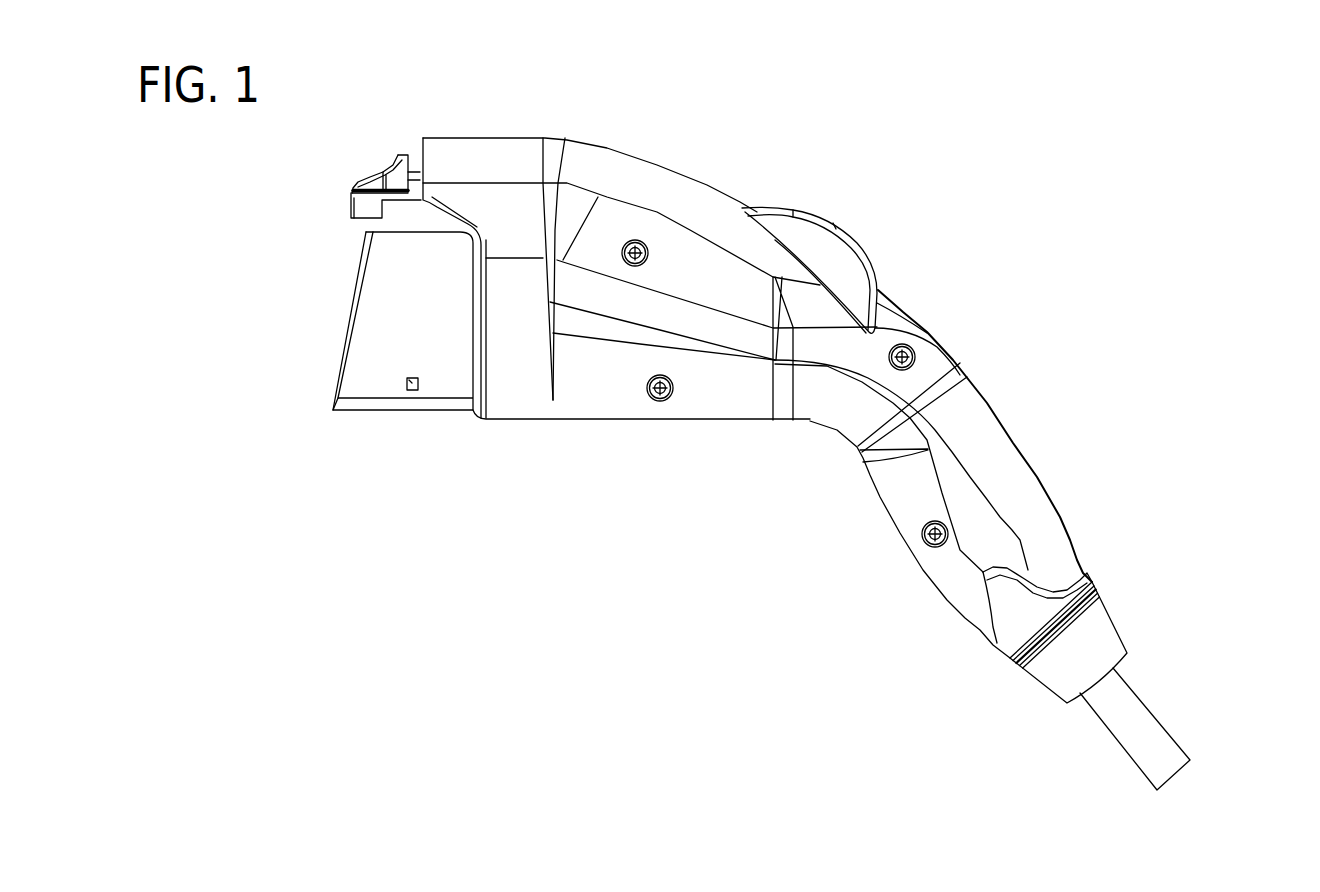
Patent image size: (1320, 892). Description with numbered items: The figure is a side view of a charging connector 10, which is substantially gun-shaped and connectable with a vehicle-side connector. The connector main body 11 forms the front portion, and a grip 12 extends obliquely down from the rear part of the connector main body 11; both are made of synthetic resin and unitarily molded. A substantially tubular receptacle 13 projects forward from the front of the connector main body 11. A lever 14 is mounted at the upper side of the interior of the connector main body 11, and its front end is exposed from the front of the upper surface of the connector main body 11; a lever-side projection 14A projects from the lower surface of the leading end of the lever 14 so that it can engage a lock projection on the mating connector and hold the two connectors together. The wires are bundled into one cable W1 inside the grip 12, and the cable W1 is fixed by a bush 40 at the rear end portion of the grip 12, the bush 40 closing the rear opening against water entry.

The charging connector 10 is at (720, 120).
The connector main body 11 is at (620, 170).
The grip 12 is at (1005, 435).
The receptacle 13 is at (370, 339).
The lever 14 is at (400, 153).
The lever-side projection 14A is at (360, 210).
The bush 40 is at (1103, 630).
The cable W1 is at (1147, 725).